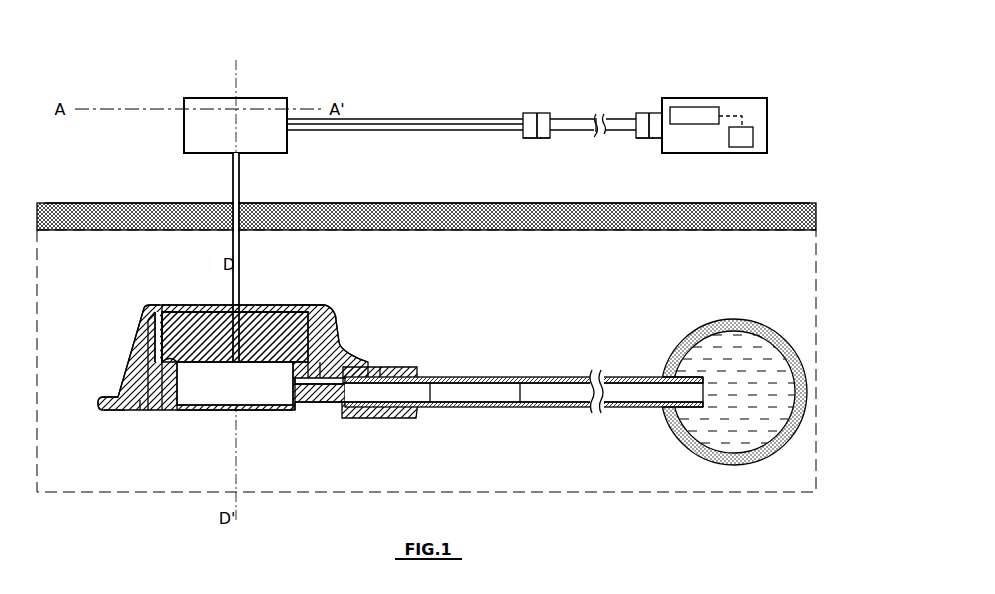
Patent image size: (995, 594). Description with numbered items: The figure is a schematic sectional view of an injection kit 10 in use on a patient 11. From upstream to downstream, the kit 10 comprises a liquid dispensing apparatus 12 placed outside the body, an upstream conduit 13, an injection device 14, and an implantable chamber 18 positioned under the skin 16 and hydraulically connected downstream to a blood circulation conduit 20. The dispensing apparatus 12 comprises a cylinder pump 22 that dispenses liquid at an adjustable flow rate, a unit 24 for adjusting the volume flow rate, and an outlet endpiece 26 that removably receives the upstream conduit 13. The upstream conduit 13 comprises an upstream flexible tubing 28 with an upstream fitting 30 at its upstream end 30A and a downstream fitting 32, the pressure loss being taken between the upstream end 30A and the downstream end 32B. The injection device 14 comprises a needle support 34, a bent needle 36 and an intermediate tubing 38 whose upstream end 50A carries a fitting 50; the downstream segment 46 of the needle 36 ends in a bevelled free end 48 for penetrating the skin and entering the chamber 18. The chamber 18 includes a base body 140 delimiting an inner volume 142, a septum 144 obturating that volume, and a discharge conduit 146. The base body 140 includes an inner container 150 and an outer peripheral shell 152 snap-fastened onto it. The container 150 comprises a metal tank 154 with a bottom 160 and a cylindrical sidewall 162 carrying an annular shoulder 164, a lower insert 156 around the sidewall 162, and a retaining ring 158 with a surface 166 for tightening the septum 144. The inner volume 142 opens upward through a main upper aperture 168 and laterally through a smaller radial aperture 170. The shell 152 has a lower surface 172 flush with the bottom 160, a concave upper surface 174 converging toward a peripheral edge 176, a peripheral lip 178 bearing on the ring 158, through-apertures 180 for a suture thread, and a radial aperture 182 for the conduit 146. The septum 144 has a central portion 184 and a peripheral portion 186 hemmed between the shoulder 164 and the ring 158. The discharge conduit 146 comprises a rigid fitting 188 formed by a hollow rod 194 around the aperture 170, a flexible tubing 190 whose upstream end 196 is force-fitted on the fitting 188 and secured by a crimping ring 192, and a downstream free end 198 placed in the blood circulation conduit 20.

The injection kit 10 is at (480, 106).
The patient 11 is at (45, 218).
The liquid dispensing apparatus 12 is at (772, 138).
The upstream conduit 13 is at (594, 102).
The injection device 14 is at (390, 108).
The skin 16 is at (778, 218).
The implantable chamber 18 is at (209, 363).
The blood circulation conduit 20 is at (728, 392).
The pump 22 is at (692, 110).
The unit for adjusting the volume flow rate 24 is at (742, 137).
The outlet endpiece 26 is at (656, 138).
The upstream flexible tubing 28 is at (570, 119).
The upstream fitting 30 is at (641, 113).
The upstream end of the tubing 30A is at (653, 113).
The downstream fitting 32 is at (541, 113).
The downstream end of the upstream conduit 32B is at (545, 138).
The needle support 34 is at (185, 135).
The needle 36 is at (241, 188).
The intermediate tubing 38 is at (372, 116).
The downstream segment 46 is at (233, 181).
The bevelled free end 48 is at (258, 406).
The fitting 50 is at (526, 114).
The upstream end of the intermediate tubing 50A is at (530, 138).
The base body 140 is at (209, 364).
The inner volume 142 is at (226, 402).
The septum 144 is at (251, 303).
The discharge conduit 146 is at (592, 422).
The inner container 150 is at (150, 367).
The outer peripheral shell 152 is at (342, 418).
The metal tank 154 is at (241, 412).
The lower insert 156 is at (170, 411).
The retaining ring 158 is at (147, 313).
The bottom 160 is at (286, 408).
The sidewall 162 is at (330, 342).
The annular shoulder 164 is at (298, 380).
The upper surface for tightening the septum 166 is at (190, 312).
The main upper aperture 168 is at (286, 307).
The radial aperture 170 is at (290, 396).
The lower surface 172 is at (150, 411).
The concave upper surface 174 is at (130, 352).
The peripheral edge 176 is at (98, 405).
The peripheral lip 178 is at (170, 307).
The through-apertures 180 is at (120, 408).
The radial aperture of the shell 182 is at (330, 410).
The central portion 184 is at (222, 312).
The peripheral portion 186 is at (158, 332).
The rigid fitting 188 is at (386, 418).
The flexible tubing 190 is at (642, 420).
The crimping ring 192 is at (366, 367).
The hollow rod 194 is at (400, 370).
The upstream end of the tubing 196 is at (426, 380).
The downstream free end 198 is at (688, 372).